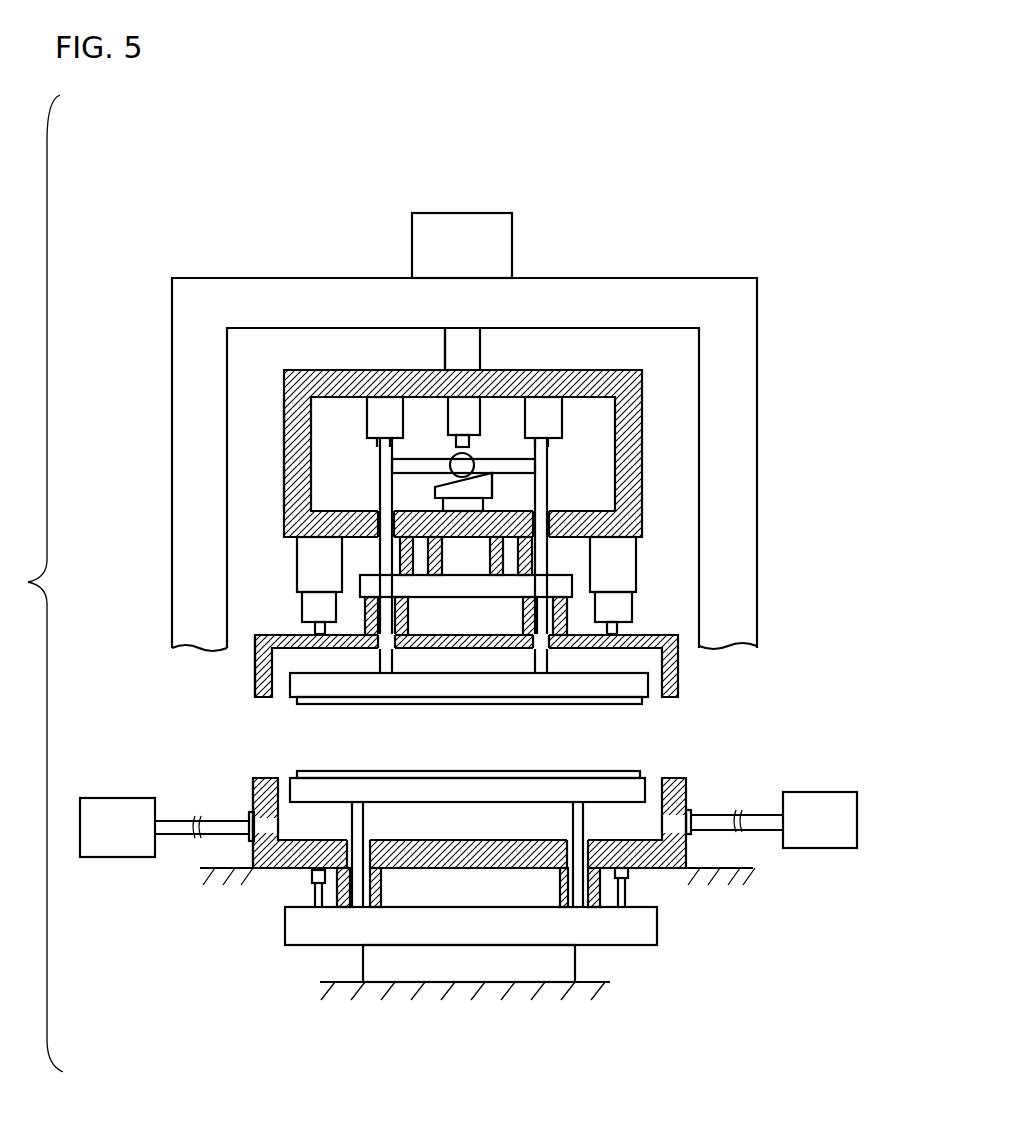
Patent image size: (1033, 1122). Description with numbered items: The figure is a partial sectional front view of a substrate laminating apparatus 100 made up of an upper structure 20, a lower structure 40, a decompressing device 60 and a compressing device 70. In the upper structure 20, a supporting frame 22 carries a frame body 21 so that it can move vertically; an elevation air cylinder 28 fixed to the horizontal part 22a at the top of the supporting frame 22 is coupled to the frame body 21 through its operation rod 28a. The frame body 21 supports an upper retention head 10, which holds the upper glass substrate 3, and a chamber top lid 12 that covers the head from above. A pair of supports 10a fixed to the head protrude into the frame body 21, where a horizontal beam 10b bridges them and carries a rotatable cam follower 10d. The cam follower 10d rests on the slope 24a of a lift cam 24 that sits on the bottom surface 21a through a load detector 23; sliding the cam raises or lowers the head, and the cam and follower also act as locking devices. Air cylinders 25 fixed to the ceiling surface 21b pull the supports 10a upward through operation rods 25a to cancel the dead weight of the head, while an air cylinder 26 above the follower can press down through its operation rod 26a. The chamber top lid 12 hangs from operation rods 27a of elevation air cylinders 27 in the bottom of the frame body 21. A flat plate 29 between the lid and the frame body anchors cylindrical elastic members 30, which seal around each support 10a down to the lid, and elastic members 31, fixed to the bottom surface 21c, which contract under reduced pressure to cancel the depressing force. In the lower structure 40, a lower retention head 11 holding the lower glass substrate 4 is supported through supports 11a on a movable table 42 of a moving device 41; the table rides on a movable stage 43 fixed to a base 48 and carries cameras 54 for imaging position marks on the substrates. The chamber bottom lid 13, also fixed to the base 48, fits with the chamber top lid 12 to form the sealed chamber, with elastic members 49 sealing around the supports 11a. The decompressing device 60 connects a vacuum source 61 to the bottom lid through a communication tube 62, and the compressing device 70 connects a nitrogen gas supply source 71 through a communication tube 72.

The substrate laminating apparatus 100 is at (697, 166).
The upper structure 20 is at (788, 472).
The supporting frame 22 is at (766, 340).
The horizontal part 22a is at (697, 276).
The elevation air cylinder 28 is at (478, 213).
The operation rod 28a is at (444, 357).
The frame body 21 is at (283, 458).
The bottom surface 21a is at (283, 492).
The ceiling surface 21b is at (287, 405).
The bottom surface 21c is at (290, 545).
The flat plate 29 is at (592, 560).
The elevation air cylinder 27 is at (302, 608).
The operation rod 27a is at (307, 628).
The air cylinder 25 is at (312, 412).
The operation rod 25a is at (380, 446).
The air cylinder 26 is at (482, 408).
The operation rod 26a is at (449, 442).
The cam follower 10d is at (455, 456).
The horizontal beam 10b is at (440, 456).
The lift cam 24 is at (493, 478).
The slope 24a is at (436, 488).
The load detector 23 is at (484, 504).
The support 10a is at (383, 673).
The elastic member 31 is at (490, 558).
The elastic member 30 is at (522, 625).
The upper retention head 10 is at (272, 695).
The chamber top lid 12 is at (255, 678).
The upper glass substrate 3 is at (578, 704).
The lower glass substrate 4 is at (433, 771).
The lower retention head 11 is at (280, 778).
The chamber bottom lid 13 is at (253, 797).
The support 11a is at (365, 825).
The elastic member 49 is at (382, 893).
The camera 54 is at (312, 893).
The movable table 42 is at (287, 942).
The movable stage 43 is at (577, 960).
The base 48 is at (328, 985).
The moving device 41 is at (286, 992).
The lower structure 40 is at (748, 756).
The decompressing device 60 is at (802, 874).
The vacuum source 61 is at (833, 792).
The communication tube 62 is at (760, 812).
The compressing device 70 is at (97, 878).
The gas supply source 71 is at (122, 797).
The communication tube 72 is at (213, 835).